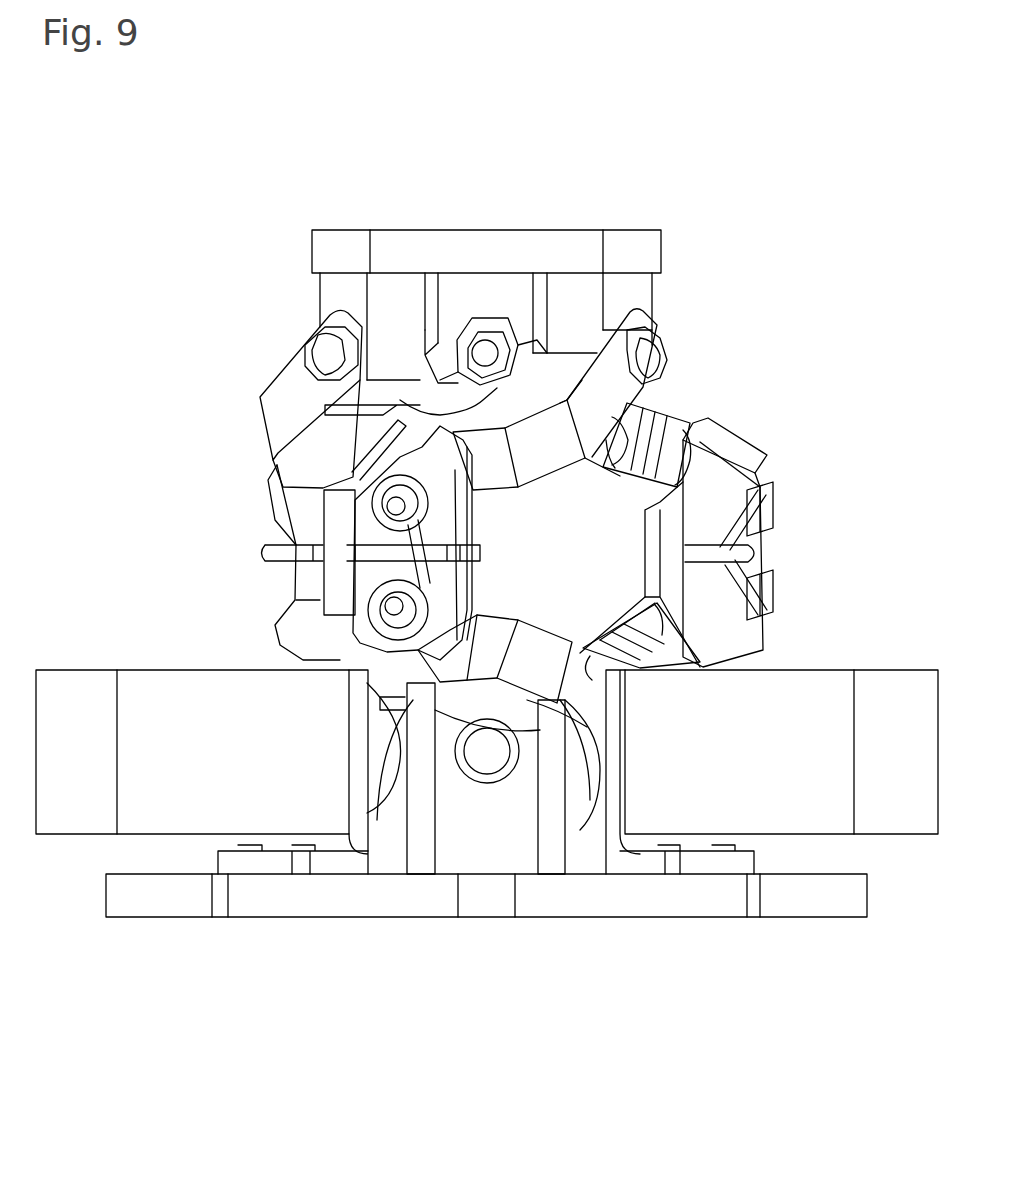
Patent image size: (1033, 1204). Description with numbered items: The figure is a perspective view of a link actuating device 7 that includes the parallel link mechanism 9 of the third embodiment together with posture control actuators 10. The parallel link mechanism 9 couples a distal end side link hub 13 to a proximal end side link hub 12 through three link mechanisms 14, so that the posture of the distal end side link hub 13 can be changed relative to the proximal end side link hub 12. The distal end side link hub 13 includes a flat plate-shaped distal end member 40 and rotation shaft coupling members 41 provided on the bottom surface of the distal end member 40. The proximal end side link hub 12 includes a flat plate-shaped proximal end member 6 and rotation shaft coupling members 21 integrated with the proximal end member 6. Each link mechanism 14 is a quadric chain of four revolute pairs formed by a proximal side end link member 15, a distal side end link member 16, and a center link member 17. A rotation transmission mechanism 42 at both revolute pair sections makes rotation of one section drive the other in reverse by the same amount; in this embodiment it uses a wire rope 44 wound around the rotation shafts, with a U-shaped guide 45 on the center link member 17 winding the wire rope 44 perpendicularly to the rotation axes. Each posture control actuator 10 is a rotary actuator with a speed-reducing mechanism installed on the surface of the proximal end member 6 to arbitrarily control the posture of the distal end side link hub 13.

The link actuating device 7 is at (695, 137).
The parallel link mechanism 9 is at (260, 328).
The distal end side link hub 13 is at (395, 150).
The distal end member 40 is at (512, 250).
The rotation shaft coupling member 41 is at (393, 297).
The distal side end link member 16 is at (288, 400).
The link mechanism 14 is at (767, 437).
The center link member 17 is at (463, 513).
The wire rope 44 is at (765, 495).
The guide 45 is at (378, 553).
The rotation transmission mechanism 42 is at (385, 605).
The posture control actuator 10 is at (176, 705).
The proximal end side link hub 12 is at (362, 1008).
The proximal end member 6 is at (364, 898).
The rotation shaft coupling member 21 is at (462, 845).
The proximal side end link member 15 is at (570, 735).